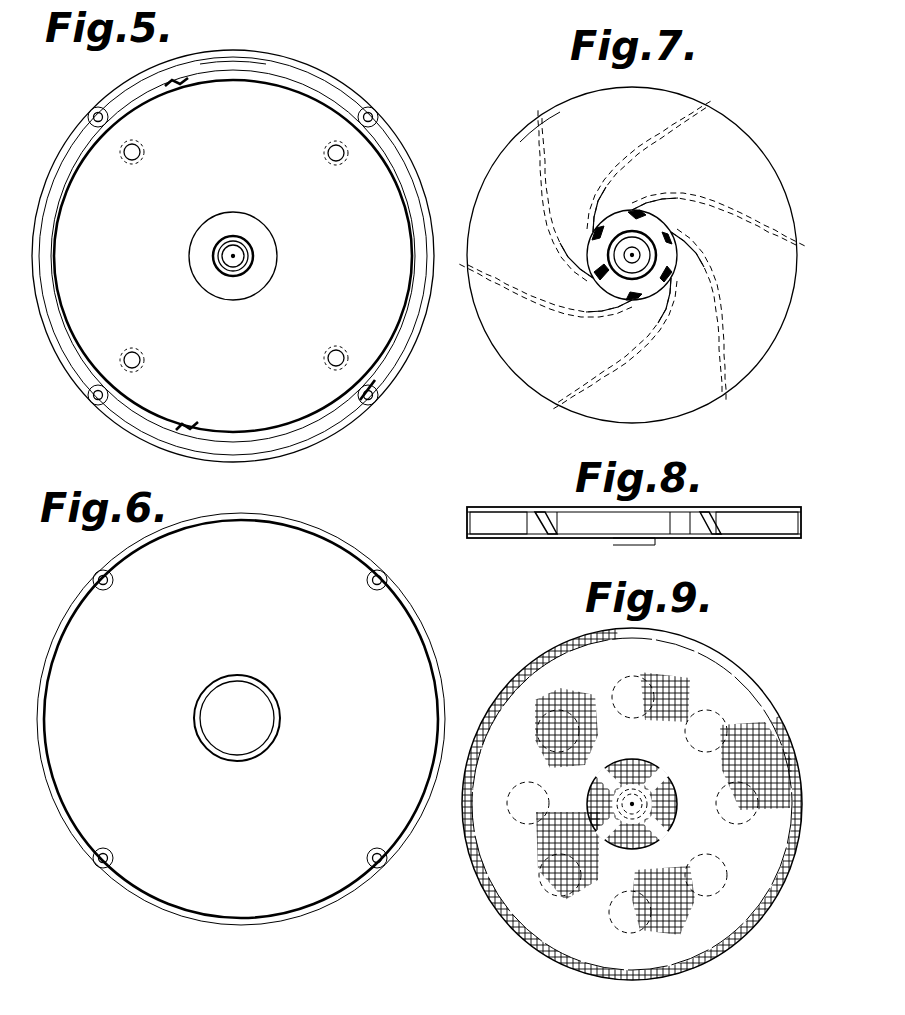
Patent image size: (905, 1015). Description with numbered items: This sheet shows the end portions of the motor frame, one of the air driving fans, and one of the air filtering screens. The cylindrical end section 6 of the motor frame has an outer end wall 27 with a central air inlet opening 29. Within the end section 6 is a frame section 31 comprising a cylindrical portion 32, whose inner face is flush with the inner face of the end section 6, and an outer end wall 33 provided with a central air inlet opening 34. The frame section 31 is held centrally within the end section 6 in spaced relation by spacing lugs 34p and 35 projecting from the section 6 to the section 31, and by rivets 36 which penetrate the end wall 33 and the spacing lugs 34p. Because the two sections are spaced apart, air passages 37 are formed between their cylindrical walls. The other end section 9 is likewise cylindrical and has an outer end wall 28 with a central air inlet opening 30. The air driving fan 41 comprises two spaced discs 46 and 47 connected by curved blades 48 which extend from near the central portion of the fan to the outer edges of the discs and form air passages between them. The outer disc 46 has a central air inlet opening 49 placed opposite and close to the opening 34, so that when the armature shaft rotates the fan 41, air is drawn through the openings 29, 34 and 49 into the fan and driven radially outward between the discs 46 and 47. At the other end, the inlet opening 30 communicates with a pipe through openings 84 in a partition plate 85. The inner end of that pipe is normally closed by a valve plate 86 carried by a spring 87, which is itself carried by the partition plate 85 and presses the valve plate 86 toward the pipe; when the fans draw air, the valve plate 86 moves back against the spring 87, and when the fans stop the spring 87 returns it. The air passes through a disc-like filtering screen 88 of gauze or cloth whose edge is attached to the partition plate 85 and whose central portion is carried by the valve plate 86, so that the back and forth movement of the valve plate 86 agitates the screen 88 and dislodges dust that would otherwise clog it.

In FIG. 5, the end section 6 is at (415, 355).
In FIG. 6, the end section 9 is at (434, 660).
In FIG. 5, the outer end wall 27 is at (200, 270).
In FIG. 6, the outer end wall 28 is at (240, 719).
In FIG. 5, the central air inlet opening 29 is at (250, 258).
In FIG. 6, the central air inlet opening 30 is at (275, 722).
In FIG. 5, the frame section 31 is at (85, 362).
In FIG. 5, the cylindrical portion 32 is at (205, 435).
In FIG. 5, the outer end wall 33 is at (303, 113).
In FIG. 5, the central air inlet opening 34 is at (233, 285).
In FIG. 5, the spacing lugs 34p is at (138, 163).
In FIG. 5, the spacing lugs 35 is at (385, 135).
In FIG. 5, the rivets 36 is at (145, 152).
In FIG. 5, the air passages 37 is at (243, 62).
In FIG. 7, the air driving fan 41 is at (535, 110).
In FIG. 8, the air driving fan 41 is at (480, 540).
In FIG. 7, the outer disc 46 is at (755, 352).
In FIG. 8, the outer disc 46 is at (775, 540).
In FIG. 7, the disc 47 is at (612, 307).
In FIG. 8, the disc 47 is at (492, 508).
In FIG. 7, the curved blades 48 is at (540, 170).
In FIG. 8, the curved blades 48 is at (555, 520).
In FIG. 7, the central air inlet opening 49 is at (640, 198).
In FIG. 9, the openings 84 is at (690, 737).
In FIG. 9, the partition plate 85 is at (505, 940).
In FIG. 9, the valve plate 86 is at (590, 792).
In FIG. 9, the spring 87 is at (648, 814).
In FIG. 9, the filtering screen 88 is at (760, 740).